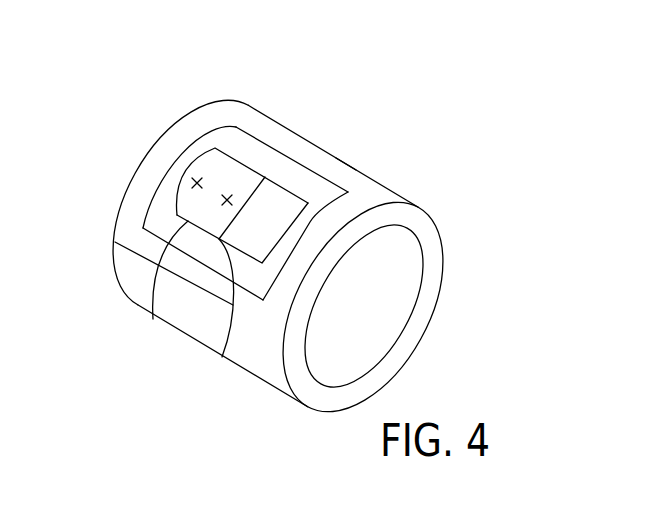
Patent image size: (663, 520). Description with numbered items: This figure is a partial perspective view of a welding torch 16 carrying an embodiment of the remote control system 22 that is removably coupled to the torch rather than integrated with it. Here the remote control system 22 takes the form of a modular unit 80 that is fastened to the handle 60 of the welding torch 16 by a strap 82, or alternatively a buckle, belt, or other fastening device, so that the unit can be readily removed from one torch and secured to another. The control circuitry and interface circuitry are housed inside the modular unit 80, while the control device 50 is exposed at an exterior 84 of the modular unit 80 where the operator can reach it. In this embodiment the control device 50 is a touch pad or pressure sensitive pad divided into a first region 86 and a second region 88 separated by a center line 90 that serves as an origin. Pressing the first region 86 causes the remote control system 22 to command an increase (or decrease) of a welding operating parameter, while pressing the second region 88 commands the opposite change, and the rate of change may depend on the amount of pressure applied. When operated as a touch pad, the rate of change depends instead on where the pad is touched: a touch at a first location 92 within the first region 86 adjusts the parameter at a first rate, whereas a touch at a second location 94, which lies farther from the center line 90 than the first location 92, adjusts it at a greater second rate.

The welding torch 16 is at (435, 254).
The remote control system 22 is at (229, 142).
The control device 50 is at (251, 162).
The handle 60 is at (160, 172).
The modular unit 80 is at (183, 170).
The strap 82 is at (347, 168).
The exterior 84 is at (157, 210).
The first region 86 is at (153, 319).
The second region 88 is at (267, 214).
The center line 90 is at (222, 357).
The first location 92 is at (227, 196).
The second location 94 is at (195, 188).